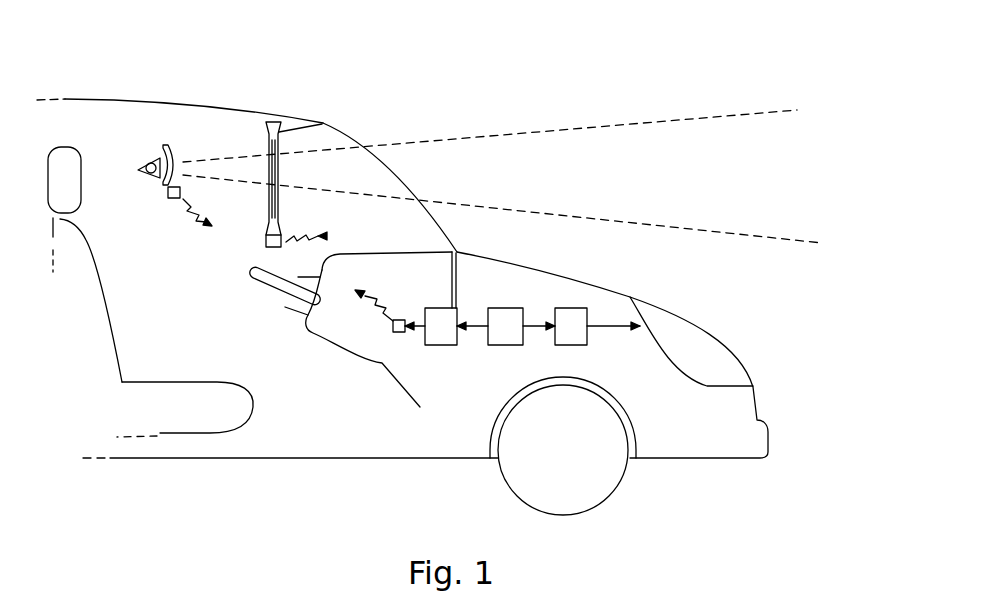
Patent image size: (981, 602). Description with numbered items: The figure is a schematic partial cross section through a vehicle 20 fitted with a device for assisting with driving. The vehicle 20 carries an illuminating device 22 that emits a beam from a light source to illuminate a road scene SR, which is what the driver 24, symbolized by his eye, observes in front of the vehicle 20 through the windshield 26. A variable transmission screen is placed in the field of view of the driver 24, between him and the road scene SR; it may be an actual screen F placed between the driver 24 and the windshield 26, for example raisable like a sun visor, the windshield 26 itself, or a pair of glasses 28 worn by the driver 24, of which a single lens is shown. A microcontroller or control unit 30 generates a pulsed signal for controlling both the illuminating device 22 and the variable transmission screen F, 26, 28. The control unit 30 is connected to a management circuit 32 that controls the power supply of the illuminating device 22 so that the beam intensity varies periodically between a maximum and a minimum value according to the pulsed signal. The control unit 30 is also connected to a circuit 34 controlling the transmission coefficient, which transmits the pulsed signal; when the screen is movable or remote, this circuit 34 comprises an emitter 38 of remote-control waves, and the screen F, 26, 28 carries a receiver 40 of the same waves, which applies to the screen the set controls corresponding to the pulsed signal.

The vehicle 20 is at (585, 76).
The illuminating device 22 is at (680, 333).
The driver 24 is at (141, 156).
The windshield 26 is at (437, 214).
The pair of glasses 28 is at (167, 147).
The control unit 30 is at (507, 345).
The management circuit 32 is at (587, 338).
The circuit controlling the transmission coefficient 34 is at (443, 345).
The emitter 38 is at (393, 326).
The receiver 40 is at (168, 198).
The screen F is at (323, 124).
The road scene SR is at (807, 193).